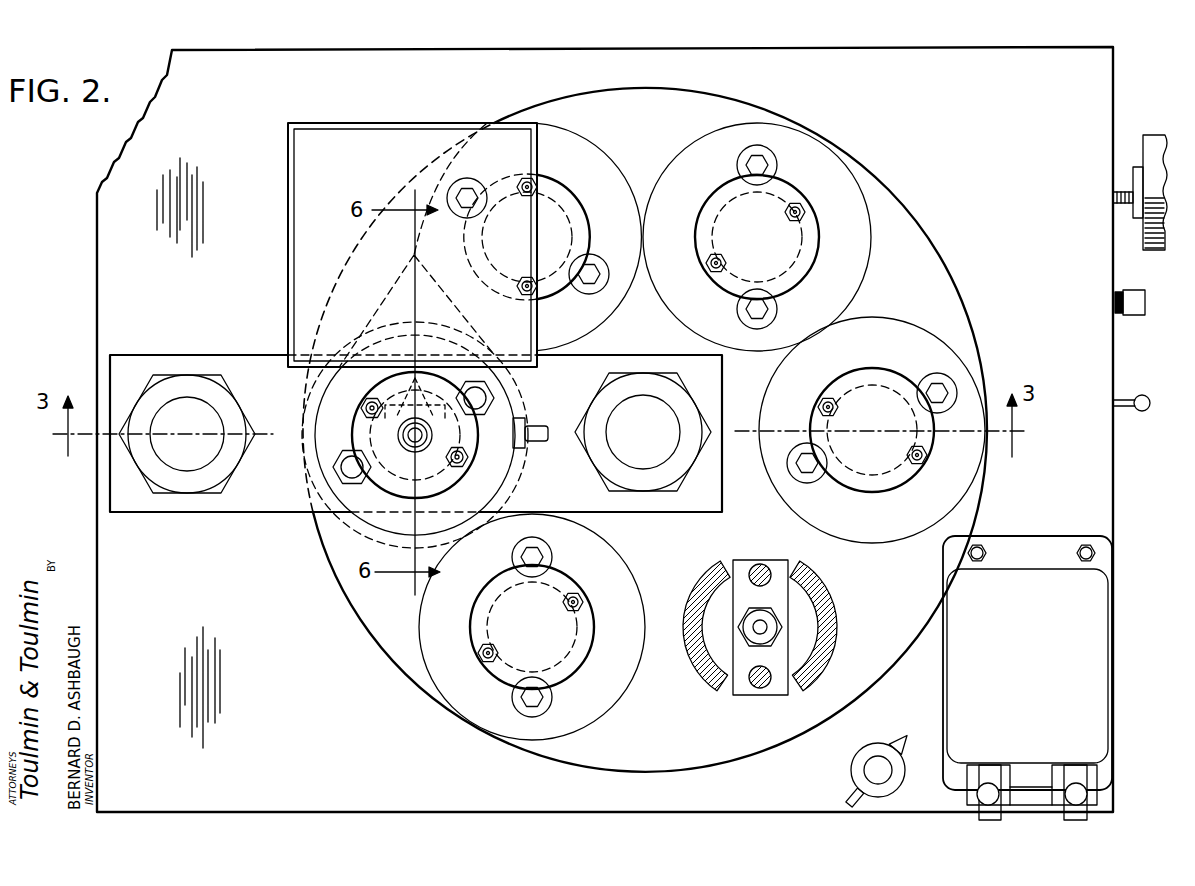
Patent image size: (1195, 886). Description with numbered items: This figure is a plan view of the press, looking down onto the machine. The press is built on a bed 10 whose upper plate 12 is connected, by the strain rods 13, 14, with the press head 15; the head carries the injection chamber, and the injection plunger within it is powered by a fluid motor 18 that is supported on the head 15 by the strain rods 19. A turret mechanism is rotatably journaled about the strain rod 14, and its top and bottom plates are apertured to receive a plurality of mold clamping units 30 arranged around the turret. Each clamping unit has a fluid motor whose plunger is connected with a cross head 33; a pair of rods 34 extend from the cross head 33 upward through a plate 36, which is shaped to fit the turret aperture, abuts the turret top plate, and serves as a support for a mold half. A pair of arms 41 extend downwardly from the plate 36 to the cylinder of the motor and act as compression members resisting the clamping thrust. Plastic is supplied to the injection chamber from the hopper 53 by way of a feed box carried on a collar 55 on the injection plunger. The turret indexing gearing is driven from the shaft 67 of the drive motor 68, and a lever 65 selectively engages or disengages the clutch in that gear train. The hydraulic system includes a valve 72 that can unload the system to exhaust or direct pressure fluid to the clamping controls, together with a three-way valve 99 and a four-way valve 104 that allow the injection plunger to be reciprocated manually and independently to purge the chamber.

The bed 10 is at (86, 258).
The upper plate 12 is at (285, 727).
The strain rod 13 is at (188, 472).
The strain rod 14 is at (667, 402).
The press head 15 is at (693, 513).
The fluid motor 18 is at (362, 411).
The strain rod 19 is at (335, 471).
The mold clamping unit 30 is at (714, 277).
The cross head 33 is at (779, 568).
The rod 34 is at (760, 563).
The plate 36 is at (570, 137).
The arm 41 is at (832, 653).
The hopper 53 is at (290, 273).
The collar 55 is at (476, 430).
The lever 65 is at (1140, 412).
The shaft 67 is at (1123, 186).
The drive motor 68 is at (1150, 142).
The valve 72 is at (990, 767).
The three-way valve 99 is at (865, 776).
The four-way valve 104 is at (1073, 767).